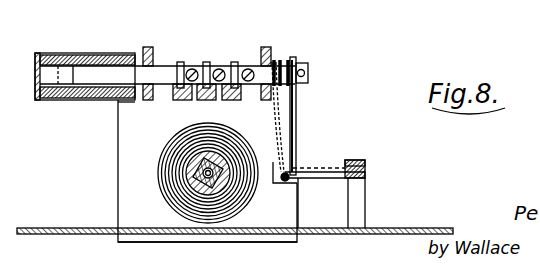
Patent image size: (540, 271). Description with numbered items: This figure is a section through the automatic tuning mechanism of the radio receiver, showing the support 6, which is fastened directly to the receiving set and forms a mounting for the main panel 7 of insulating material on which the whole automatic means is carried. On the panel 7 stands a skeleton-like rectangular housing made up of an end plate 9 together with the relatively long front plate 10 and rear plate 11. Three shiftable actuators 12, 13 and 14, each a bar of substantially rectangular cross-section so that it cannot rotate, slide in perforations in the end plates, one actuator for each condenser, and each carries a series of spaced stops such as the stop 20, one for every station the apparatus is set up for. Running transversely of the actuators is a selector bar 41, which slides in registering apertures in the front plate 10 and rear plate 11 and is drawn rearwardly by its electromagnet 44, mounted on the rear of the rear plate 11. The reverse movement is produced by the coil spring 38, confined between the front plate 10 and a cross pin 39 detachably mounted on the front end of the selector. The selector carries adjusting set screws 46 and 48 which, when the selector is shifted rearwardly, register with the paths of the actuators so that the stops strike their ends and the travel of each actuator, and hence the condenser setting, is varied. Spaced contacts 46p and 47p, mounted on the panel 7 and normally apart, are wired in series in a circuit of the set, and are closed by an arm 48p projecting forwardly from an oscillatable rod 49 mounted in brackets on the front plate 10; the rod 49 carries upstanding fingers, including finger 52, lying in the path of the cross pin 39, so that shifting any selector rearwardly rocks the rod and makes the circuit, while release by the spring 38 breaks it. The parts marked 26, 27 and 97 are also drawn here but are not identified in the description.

The support 6 is at (205, 242).
The main panel 7 is at (58, 228).
The end plate 9 is at (118, 151).
The front plate 10 is at (267, 47).
The rear plate 11 is at (147, 47).
The actuator 12 is at (236, 98).
The actuator 13 is at (206, 102).
The actuator 14 is at (178, 92).
The stop 20 is at (177, 62).
The spiral spring 26 is at (160, 164).
The hub 27 is at (205, 176).
The coil spring 38 is at (293, 57).
The cross pin 39 is at (309, 70).
The selector bar 41 is at (118, 74).
The electromagnet 44 is at (88, 53).
The set screw 46 is at (192, 69).
The contact 46p is at (366, 172).
The contact 47p is at (358, 160).
The set screw 48 is at (248, 69).
The arm 48p is at (322, 168).
The oscillatable rod 49 is at (285, 182).
The upstanding finger 52 is at (297, 124).
The contact screw 97 is at (219, 69).